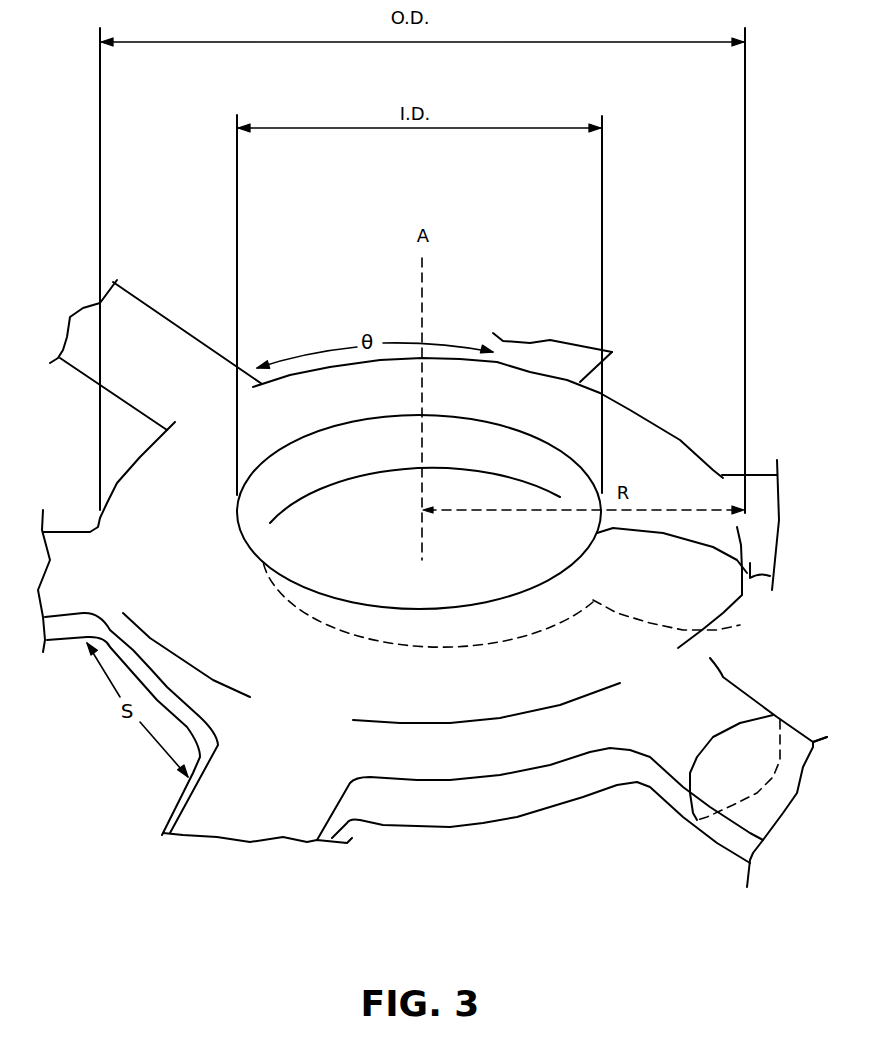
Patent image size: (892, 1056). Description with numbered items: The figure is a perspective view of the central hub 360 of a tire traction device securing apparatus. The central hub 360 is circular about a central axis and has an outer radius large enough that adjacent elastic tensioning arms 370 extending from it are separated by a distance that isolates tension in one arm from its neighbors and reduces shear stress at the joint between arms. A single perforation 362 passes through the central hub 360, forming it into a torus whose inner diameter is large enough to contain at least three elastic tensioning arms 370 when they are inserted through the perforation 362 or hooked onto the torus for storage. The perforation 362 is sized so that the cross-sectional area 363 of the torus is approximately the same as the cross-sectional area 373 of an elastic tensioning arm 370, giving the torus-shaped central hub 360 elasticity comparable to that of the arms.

The central hub 360 is at (429, 488).
The perforation 362 is at (385, 550).
The elastic tensioning arm 370 is at (84, 377).
The cross-sectional area of the torus 363 is at (770, 563).
The cross-sectional area of elastic tensioning arm 373 is at (717, 773).